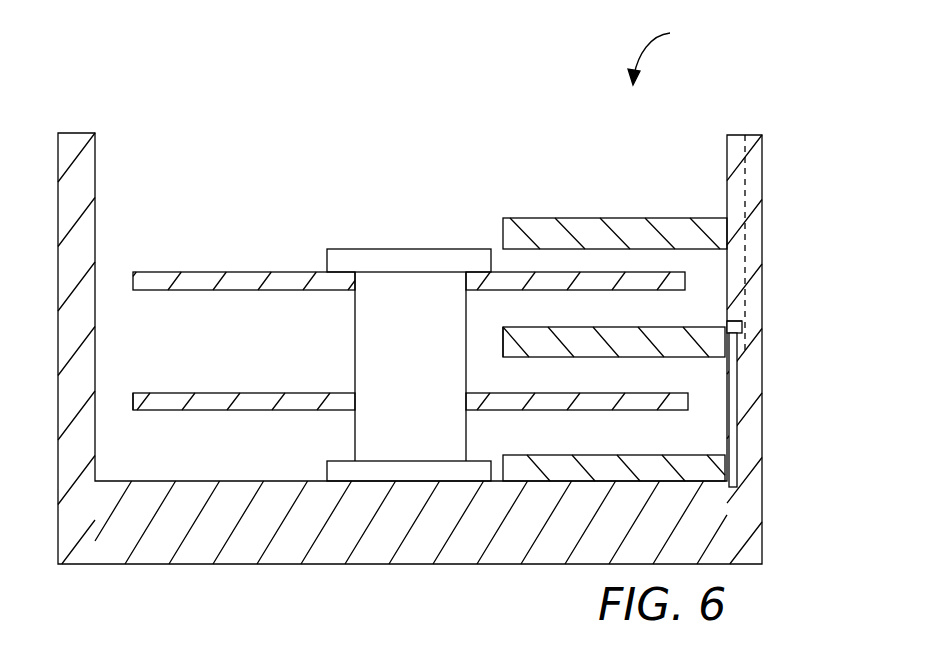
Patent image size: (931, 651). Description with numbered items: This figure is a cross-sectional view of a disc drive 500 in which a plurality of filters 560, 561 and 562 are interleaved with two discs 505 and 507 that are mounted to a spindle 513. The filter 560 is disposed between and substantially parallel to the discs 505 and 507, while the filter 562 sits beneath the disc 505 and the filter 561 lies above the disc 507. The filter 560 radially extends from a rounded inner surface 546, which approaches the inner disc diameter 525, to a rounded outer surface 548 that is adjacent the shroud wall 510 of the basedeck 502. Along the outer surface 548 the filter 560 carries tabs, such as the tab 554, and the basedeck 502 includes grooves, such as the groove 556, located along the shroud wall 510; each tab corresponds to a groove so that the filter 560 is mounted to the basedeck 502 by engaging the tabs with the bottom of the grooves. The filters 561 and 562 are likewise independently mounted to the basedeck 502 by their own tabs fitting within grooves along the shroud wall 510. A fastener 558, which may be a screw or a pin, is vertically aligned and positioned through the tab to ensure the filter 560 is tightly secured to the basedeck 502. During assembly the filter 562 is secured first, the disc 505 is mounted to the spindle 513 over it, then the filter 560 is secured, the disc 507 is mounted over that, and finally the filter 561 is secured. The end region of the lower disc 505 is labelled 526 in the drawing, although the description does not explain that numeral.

The disc drive 500 is at (672, 52).
The basedeck 502 is at (348, 528).
The disc 505 is at (248, 400).
The disc 507 is at (242, 277).
The shroud wall 510 is at (727, 168).
The spindle 513 is at (432, 292).
The inner disc diameter 525 is at (355, 394).
The plate end gap 526 is at (130, 395).
The inner surface 546 is at (503, 341).
The outer surface 548 is at (727, 323).
The tab 554 is at (729, 342).
The groove 556 is at (745, 226).
The fastener 558 is at (742, 321).
The filter 560 is at (528, 333).
The filter 561 is at (537, 232).
The filter 562 is at (517, 460).